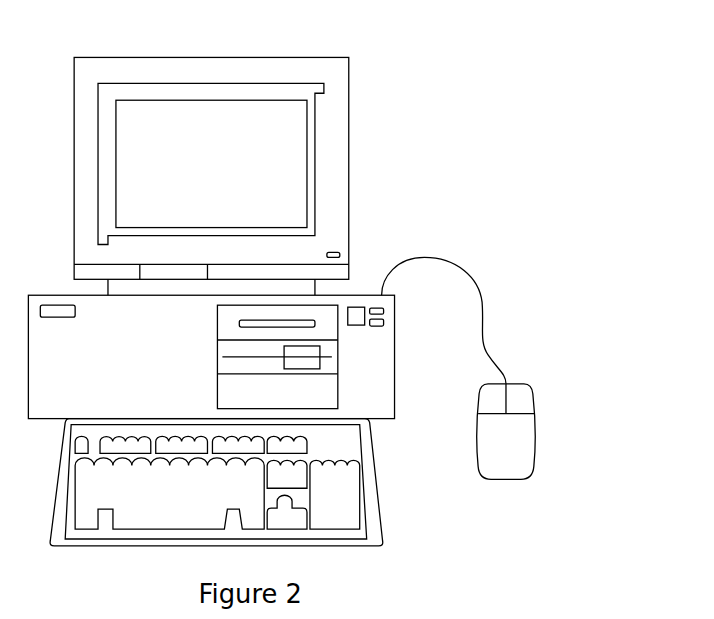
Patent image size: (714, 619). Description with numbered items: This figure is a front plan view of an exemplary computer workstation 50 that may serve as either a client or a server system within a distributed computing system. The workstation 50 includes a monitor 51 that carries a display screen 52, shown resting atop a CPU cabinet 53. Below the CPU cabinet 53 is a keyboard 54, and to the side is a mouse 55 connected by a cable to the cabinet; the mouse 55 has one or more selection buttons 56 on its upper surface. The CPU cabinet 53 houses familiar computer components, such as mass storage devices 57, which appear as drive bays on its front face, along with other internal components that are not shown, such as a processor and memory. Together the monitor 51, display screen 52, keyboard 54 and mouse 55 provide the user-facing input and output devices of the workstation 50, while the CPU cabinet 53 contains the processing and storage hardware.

The computer workstation 50 is at (363, 38).
The monitor 51 is at (242, 176).
The display screen 52 is at (199, 159).
The CPU cabinet 53 is at (235, 325).
The keyboard 54 is at (161, 501).
The mouse 55 is at (491, 453).
The selection buttons 56 is at (510, 394).
The mass storage devices 57 is at (327, 312).